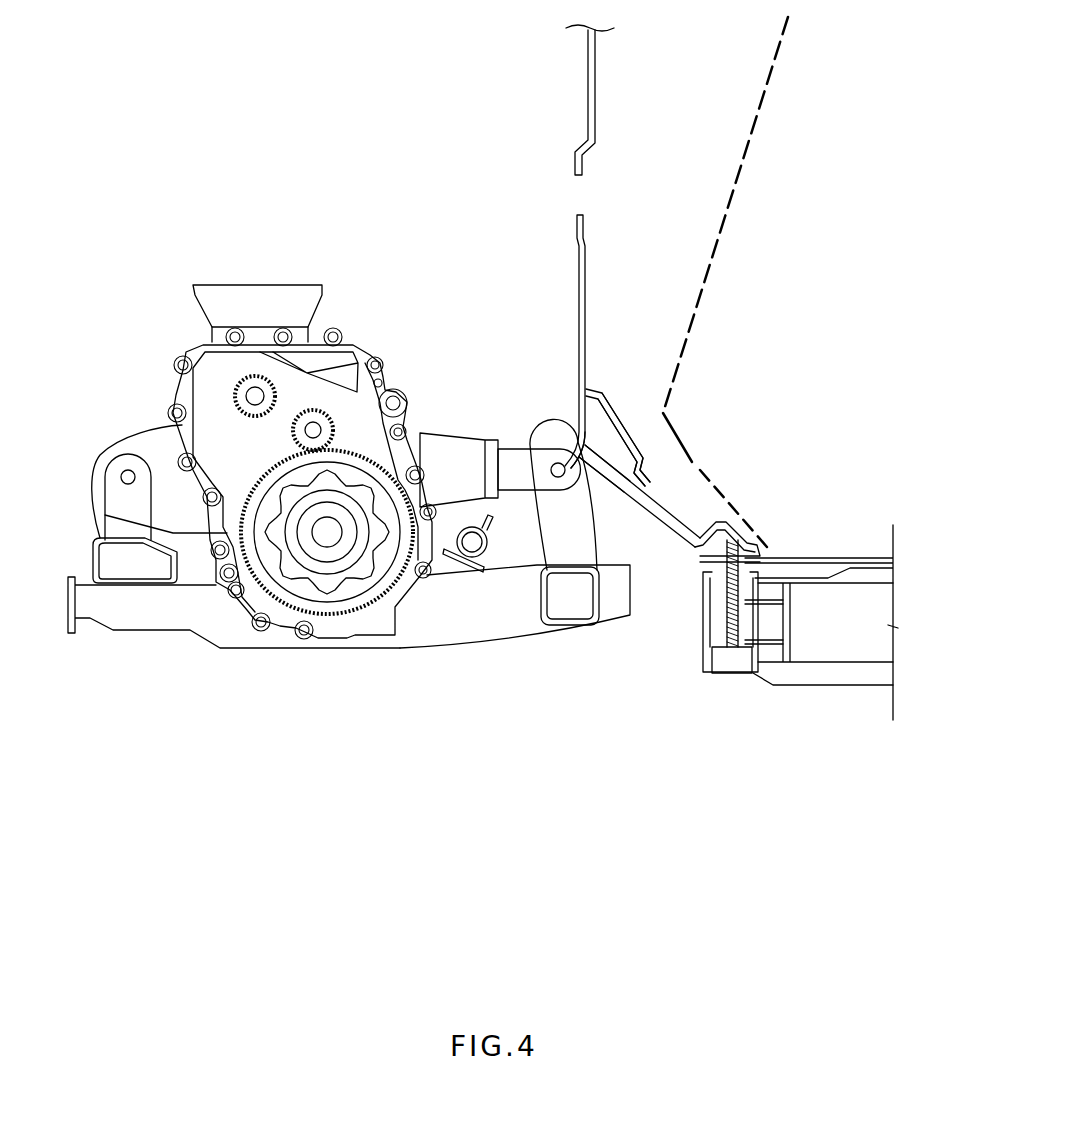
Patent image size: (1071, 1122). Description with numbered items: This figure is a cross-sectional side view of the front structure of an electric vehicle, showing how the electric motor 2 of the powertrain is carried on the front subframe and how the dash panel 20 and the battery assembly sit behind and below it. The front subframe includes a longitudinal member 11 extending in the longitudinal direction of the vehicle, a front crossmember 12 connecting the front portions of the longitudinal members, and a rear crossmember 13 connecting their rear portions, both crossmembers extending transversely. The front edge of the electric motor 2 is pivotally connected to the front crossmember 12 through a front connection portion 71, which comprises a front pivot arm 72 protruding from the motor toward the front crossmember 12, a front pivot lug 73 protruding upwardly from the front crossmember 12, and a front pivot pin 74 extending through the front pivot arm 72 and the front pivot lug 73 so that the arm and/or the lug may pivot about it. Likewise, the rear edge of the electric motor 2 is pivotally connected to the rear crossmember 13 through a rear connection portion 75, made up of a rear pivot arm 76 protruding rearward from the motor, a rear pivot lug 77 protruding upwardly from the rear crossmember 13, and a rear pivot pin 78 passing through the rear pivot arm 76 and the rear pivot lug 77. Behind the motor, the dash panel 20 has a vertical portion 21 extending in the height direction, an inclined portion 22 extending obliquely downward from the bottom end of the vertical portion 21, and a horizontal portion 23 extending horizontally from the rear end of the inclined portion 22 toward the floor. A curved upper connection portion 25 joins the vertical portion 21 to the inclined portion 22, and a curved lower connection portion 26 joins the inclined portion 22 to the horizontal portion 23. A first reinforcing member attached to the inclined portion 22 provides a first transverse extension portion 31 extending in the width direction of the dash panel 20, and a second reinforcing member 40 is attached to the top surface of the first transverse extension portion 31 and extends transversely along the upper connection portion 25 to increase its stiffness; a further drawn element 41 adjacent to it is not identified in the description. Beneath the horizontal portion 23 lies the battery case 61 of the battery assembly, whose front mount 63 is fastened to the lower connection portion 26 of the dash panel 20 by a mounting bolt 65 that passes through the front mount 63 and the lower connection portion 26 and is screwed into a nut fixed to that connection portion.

The electric motor 2 is at (362, 336).
The longitudinal member 11 is at (447, 637).
The front crossmember 12 is at (152, 585).
The rear crossmember 13 is at (573, 618).
The dash panel 20 is at (572, 228).
The vertical portion 21 is at (577, 280).
The inclined portion 22 is at (653, 520).
The horizontal portion 23 is at (863, 557).
The upper connection portion 25 is at (574, 408).
The lower connection portion 26 is at (690, 561).
The first transverse extension portion 31 is at (628, 450).
The second reinforcing member 40 is at (603, 396).
The bracket arm 41 is at (615, 420).
The battery case 61 is at (800, 680).
The front mount 63 is at (705, 627).
The mounting bolt 65 is at (733, 678).
The front connection portion 71 is at (106, 431).
The front pivot arm 72 is at (150, 433).
The front pivot lug 73 is at (113, 520).
The front pivot pin 74 is at (120, 477).
The rear connection portion 75 is at (530, 505).
The rear pivot arm 76 is at (517, 445).
The rear pivot lug 77 is at (573, 513).
The rear pivot pin 78 is at (690, 470).